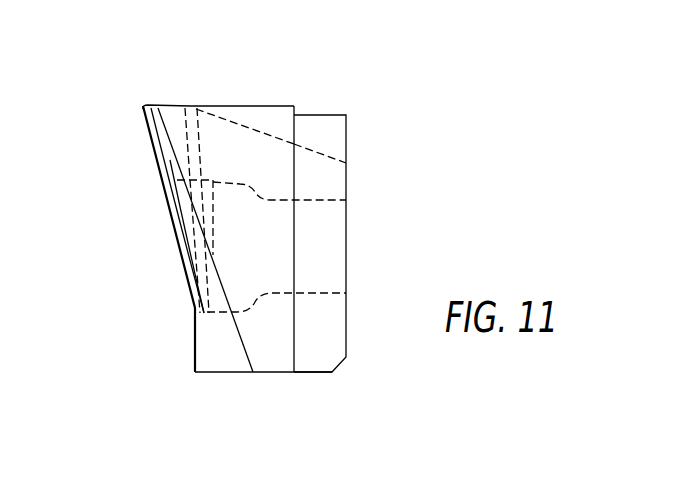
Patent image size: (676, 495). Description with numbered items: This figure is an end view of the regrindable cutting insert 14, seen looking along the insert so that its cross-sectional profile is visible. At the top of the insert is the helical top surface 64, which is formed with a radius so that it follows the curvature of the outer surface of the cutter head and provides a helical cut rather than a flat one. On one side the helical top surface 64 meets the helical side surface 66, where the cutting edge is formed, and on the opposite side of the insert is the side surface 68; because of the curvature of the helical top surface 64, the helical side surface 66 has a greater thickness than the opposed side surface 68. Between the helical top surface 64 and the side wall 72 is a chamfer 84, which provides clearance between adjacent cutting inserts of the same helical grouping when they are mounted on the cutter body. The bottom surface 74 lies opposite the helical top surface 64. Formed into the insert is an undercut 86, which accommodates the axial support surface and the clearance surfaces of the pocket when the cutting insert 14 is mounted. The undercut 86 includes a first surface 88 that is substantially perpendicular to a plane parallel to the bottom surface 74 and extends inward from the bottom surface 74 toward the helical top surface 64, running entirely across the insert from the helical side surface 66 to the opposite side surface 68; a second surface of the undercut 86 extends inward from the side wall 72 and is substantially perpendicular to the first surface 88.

The cutting insert 14 is at (188, 62).
The helical side surface 66 is at (257, 104).
The first surface 88 is at (323, 130).
The undercut 86 is at (322, 175).
The bottom surface 74 is at (352, 200).
The side wall 72 is at (256, 242).
The side surface 68 is at (273, 375).
The chamfer 84 is at (158, 142).
The helical top surface 64 is at (175, 283).